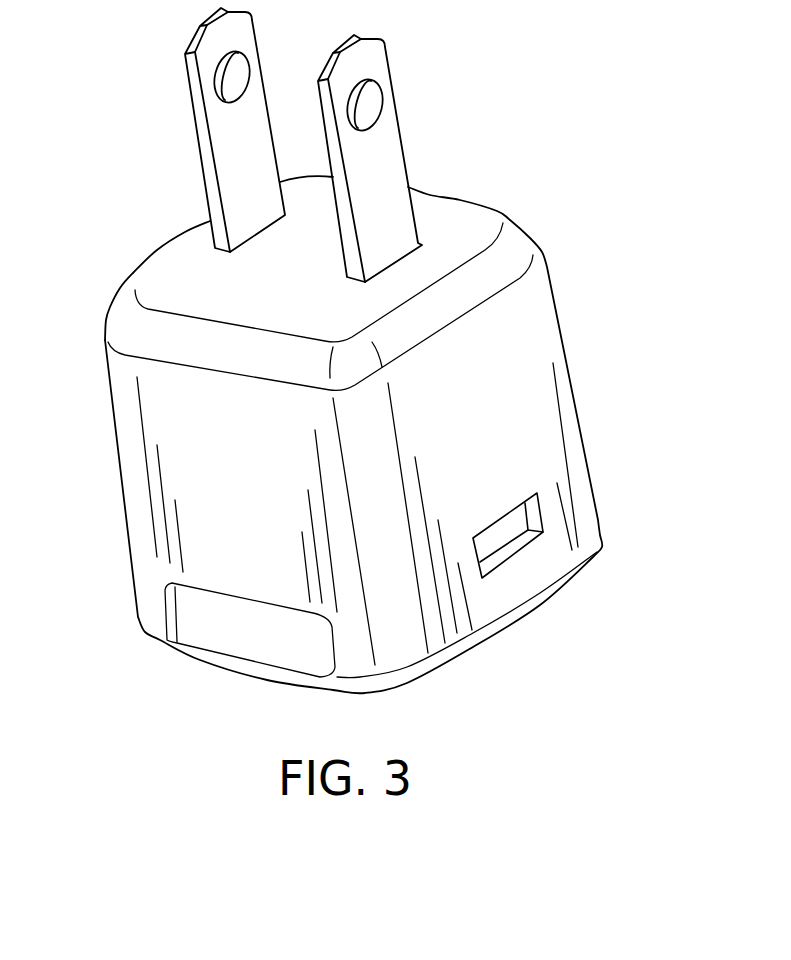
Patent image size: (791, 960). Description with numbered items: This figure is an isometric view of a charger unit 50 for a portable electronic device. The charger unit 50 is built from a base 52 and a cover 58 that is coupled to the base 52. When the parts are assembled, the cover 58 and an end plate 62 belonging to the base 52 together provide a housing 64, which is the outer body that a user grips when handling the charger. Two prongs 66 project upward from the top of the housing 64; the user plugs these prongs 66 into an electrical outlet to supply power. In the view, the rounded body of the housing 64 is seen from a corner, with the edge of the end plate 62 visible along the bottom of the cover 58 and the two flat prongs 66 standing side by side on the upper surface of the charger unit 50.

The charger unit 50 is at (581, 166).
The base 52 is at (567, 603).
The cover 58 is at (132, 478).
The end plate 62 is at (478, 645).
The housing 64 is at (573, 380).
The prongs 66 is at (367, 58).